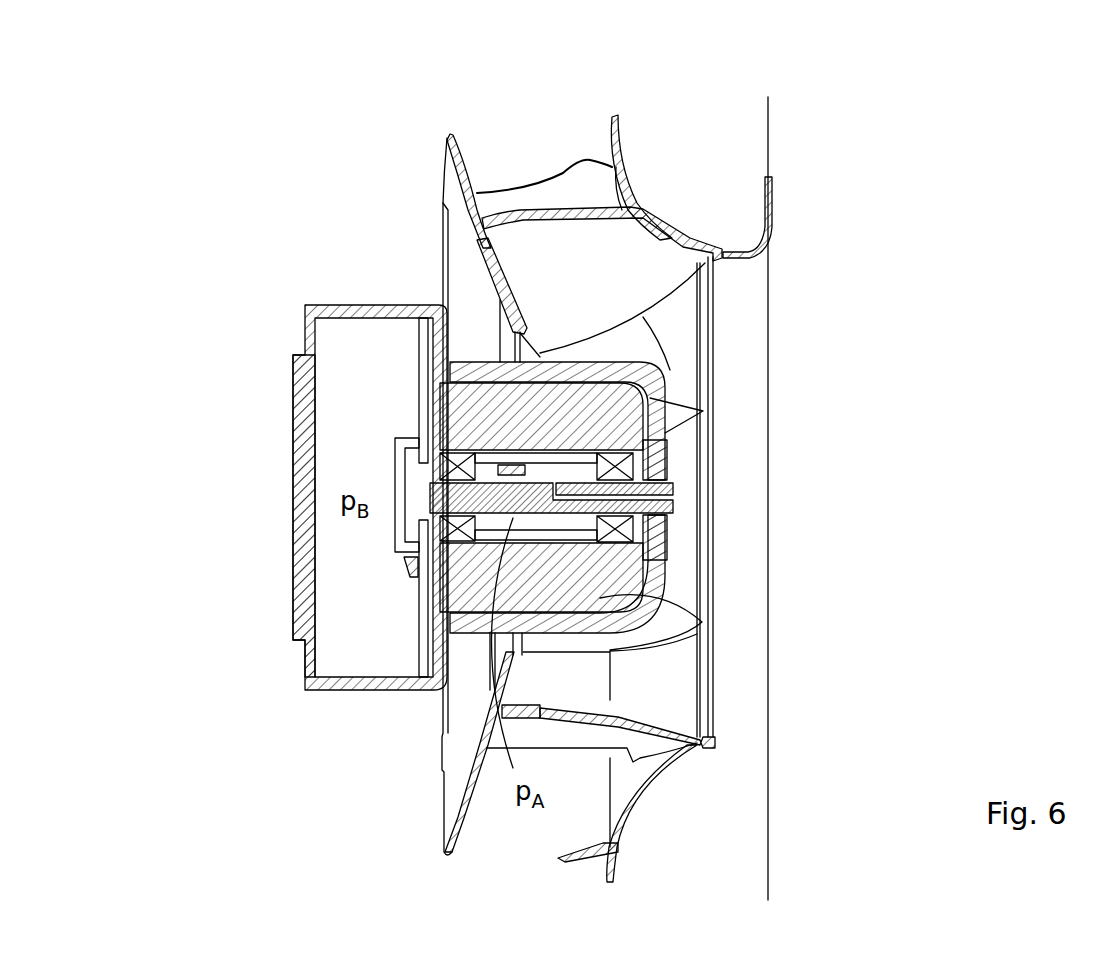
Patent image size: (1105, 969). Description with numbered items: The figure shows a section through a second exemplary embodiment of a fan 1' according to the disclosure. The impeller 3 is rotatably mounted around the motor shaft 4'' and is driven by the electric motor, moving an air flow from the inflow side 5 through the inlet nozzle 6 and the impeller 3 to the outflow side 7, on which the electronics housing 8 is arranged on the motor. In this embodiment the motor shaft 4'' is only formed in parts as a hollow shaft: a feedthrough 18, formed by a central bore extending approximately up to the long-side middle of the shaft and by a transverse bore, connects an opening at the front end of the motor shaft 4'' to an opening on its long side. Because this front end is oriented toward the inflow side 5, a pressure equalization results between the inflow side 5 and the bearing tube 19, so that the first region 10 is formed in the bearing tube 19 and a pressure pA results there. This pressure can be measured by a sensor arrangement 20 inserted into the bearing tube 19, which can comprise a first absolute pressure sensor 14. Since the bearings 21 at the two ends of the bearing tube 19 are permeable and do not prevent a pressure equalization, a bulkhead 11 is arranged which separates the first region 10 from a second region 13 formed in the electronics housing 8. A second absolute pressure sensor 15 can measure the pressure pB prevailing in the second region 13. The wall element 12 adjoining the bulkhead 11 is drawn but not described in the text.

The fan 1' is at (261, 106).
The impeller 3 is at (667, 230).
The motor shaft 4'' is at (684, 459).
The inflow side 5 is at (1023, 446).
The inlet nozzle 6 is at (745, 257).
The outflow side 7 is at (103, 446).
The electronics housing 8 is at (333, 308).
The first region 10 is at (540, 520).
The bulkhead 11 is at (398, 438).
The wall 12 is at (420, 352).
The second region 13 is at (340, 385).
The first absolute pressure sensor 14 is at (513, 467).
The second absolute pressure sensor 15 is at (415, 568).
The feedthrough 18 is at (670, 493).
The bearing tube 19 is at (580, 525).
The sensor arrangement 20 is at (575, 418).
The bearings 21 is at (610, 537).